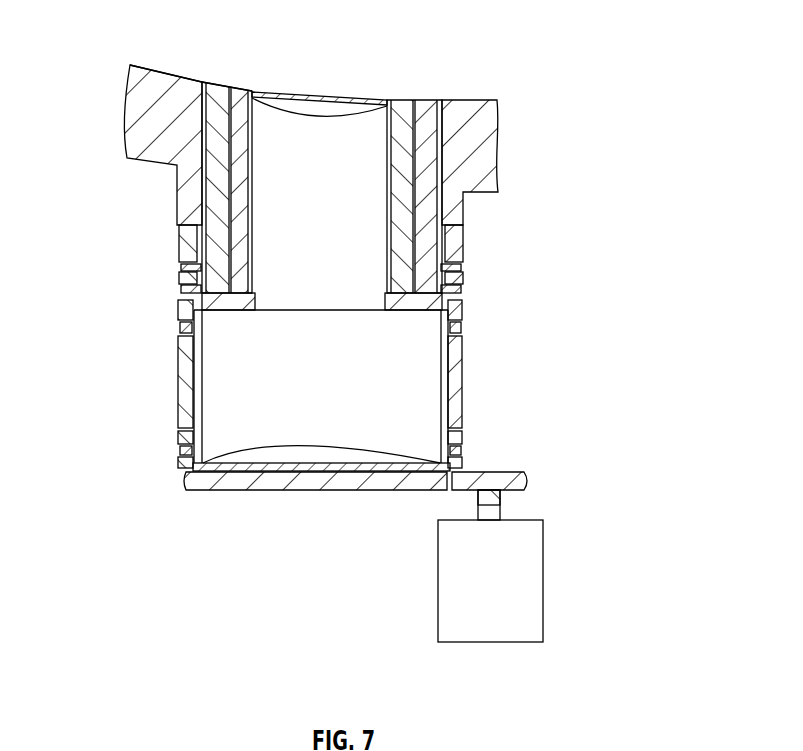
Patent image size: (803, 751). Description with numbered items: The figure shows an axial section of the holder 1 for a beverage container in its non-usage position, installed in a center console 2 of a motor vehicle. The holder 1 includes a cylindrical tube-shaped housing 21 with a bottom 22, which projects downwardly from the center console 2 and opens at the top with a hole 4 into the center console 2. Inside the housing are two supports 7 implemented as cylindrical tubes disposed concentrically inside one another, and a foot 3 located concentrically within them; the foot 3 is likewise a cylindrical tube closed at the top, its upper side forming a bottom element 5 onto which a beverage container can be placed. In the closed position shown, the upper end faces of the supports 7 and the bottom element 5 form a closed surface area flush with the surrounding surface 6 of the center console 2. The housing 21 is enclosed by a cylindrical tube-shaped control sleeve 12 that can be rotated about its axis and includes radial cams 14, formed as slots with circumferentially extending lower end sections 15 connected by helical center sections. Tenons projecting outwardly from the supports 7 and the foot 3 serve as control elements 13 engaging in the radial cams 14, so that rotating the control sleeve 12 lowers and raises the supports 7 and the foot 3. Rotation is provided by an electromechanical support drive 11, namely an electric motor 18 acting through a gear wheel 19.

The holder 1 is at (530, 150).
The center console 2 is at (140, 108).
The foot 3 is at (319, 70).
The bottom element 5 is at (327, 93).
The hole 4 is at (440, 96).
The surrounding surface 6 is at (178, 75).
The supports 7 is at (237, 210).
The electromechanical support drive 11 is at (474, 566).
The control sleeve 12 is at (180, 385).
The control elements 13 is at (188, 287).
The radial cams 14 is at (262, 449).
The lower end sections 15 is at (180, 452).
The electric motor 18 is at (535, 552).
The gear wheel 19 is at (532, 483).
The housing 21 is at (335, 395).
The bottom 22 is at (320, 452).